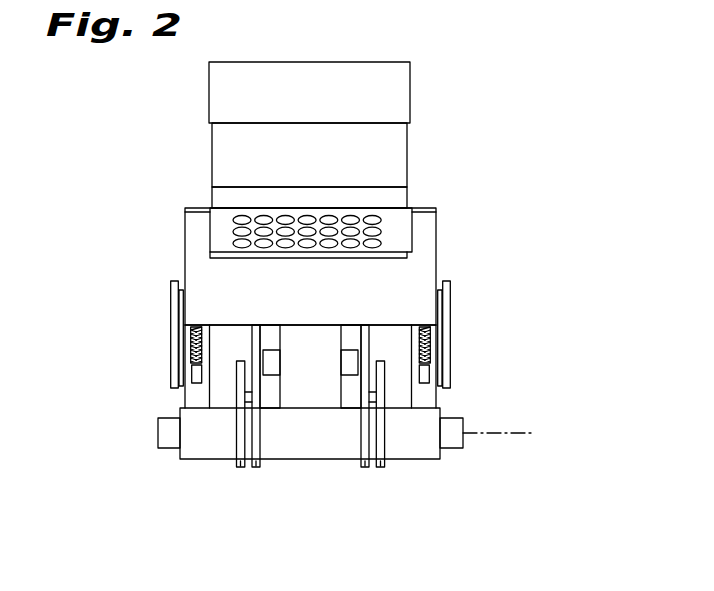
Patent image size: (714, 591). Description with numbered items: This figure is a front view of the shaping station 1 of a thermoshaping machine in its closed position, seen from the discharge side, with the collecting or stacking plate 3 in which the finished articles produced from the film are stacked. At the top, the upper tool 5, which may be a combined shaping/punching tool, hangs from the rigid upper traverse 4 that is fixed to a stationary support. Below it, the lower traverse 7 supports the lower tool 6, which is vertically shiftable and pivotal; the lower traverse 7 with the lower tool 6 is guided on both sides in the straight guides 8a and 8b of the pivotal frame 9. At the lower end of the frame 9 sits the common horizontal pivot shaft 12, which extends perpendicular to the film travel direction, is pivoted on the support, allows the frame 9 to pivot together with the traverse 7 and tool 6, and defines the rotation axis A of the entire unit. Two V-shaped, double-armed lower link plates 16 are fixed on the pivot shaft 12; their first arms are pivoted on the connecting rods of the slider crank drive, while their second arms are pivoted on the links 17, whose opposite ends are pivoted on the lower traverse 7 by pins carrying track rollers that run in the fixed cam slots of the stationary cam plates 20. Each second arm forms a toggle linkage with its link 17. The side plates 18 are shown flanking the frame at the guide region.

The shaping station 1 is at (140, 134).
The collecting or stacking plate 3 is at (393, 232).
The upper traverse 4 is at (222, 96).
The upper tool 5 is at (390, 142).
The lower tool 6 is at (224, 198).
The lower traverse 7 is at (253, 293).
The straight guide 8a is at (193, 348).
The straight guide 8b is at (427, 352).
The pivotal frame 9 is at (425, 218).
The pivot shaft 12 is at (317, 443).
The lower link plate 16 is at (240, 467).
The link 17 is at (247, 345).
The side plate 18 is at (179, 307).
The cam plate 20 is at (175, 375).
The rotation axis A is at (502, 432).